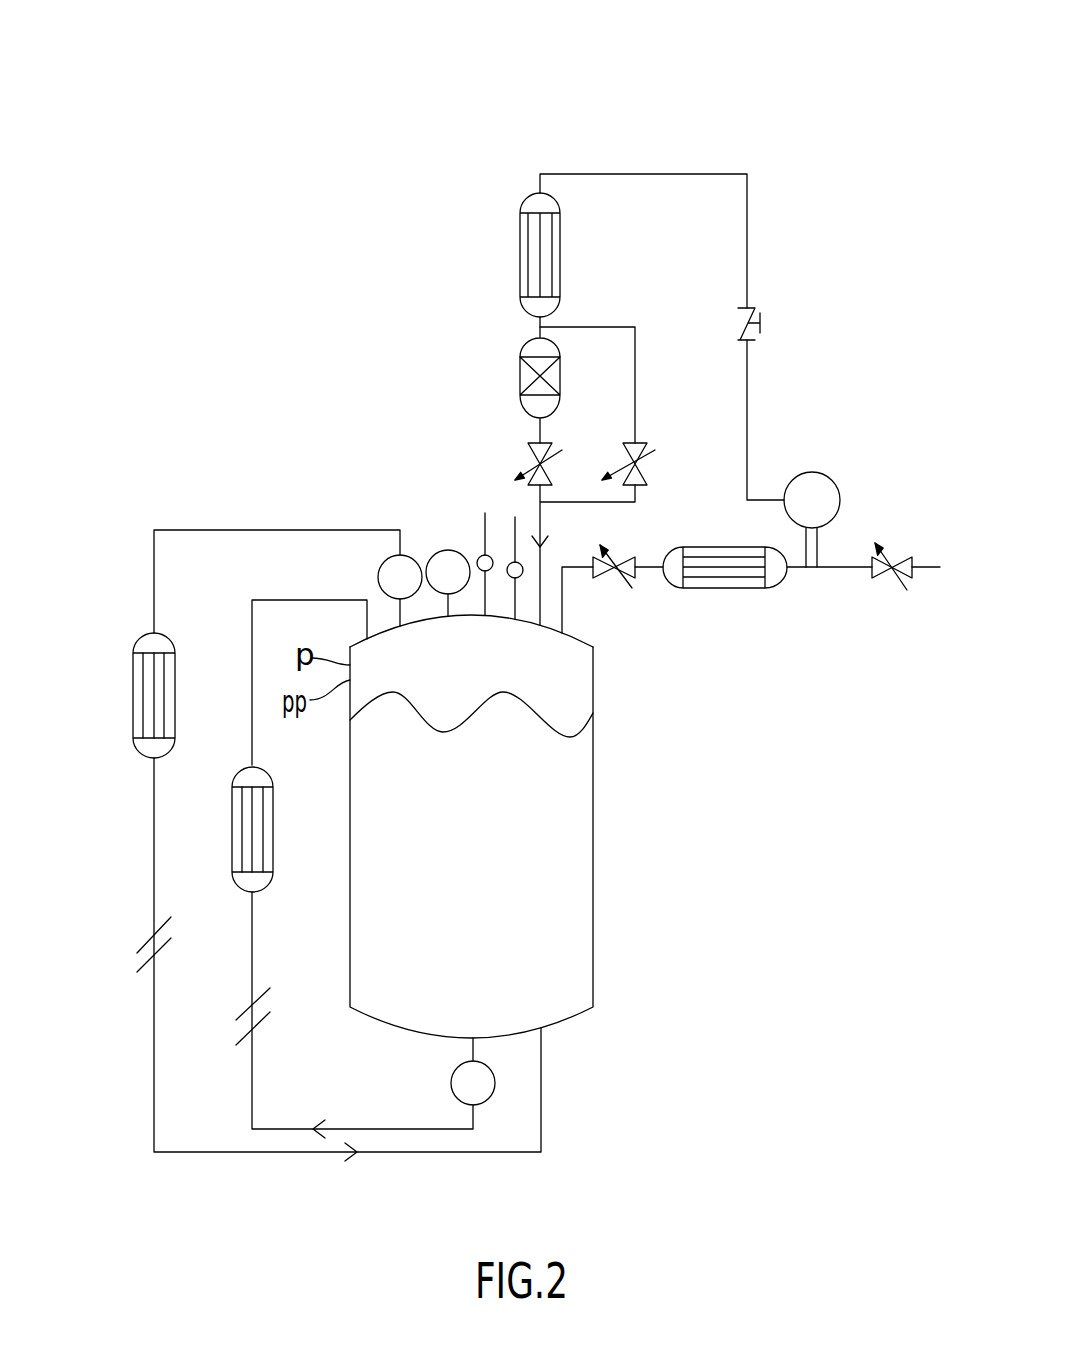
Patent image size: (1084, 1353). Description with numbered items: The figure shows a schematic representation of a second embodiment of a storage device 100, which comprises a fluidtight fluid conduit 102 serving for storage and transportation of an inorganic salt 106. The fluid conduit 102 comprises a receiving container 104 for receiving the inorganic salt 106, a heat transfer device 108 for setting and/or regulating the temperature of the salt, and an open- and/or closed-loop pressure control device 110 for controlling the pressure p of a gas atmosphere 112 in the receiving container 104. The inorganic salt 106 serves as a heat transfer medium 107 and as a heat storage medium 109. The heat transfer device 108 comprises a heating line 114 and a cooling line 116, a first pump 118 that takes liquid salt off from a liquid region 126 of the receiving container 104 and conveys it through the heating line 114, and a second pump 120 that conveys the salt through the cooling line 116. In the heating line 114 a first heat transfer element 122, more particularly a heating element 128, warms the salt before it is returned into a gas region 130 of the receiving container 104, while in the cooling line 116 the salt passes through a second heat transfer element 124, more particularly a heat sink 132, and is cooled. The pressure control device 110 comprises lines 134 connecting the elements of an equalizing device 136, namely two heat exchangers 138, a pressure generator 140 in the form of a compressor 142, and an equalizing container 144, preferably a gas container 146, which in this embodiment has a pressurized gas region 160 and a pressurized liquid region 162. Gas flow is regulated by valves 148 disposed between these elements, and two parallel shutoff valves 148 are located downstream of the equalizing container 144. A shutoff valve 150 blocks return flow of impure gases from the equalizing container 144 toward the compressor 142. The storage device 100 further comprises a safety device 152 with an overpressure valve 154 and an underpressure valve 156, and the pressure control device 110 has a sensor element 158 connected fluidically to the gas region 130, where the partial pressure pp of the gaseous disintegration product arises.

The storage device 100 is at (858, 106).
The fluid conduit 102 is at (380, 420).
The receiving container 104 is at (594, 682).
The inorganic salt 106 is at (578, 857).
The heat transfer medium 107 is at (578, 812).
The heat transfer device 108 is at (240, 515).
The heat storage medium 109 is at (578, 897).
The open- and/or closed-loop pressure control device 110 is at (720, 135).
The gas atmosphere 112 is at (580, 657).
The heating line 114 is at (353, 1129).
The cooling line 116 is at (227, 1153).
The first pump 118 is at (452, 1080).
The second pump 120 is at (400, 555).
The first heat transfer element 122 is at (232, 815).
The second heat transfer element 124 is at (133, 696).
The liquid region 126 is at (560, 952).
The heating element 128 is at (232, 852).
The gas region 130 is at (578, 708).
The heat sink 132 is at (133, 648).
The lines 134 is at (747, 236).
The equalizing device 136 is at (652, 125).
The heat exchanger 138 is at (520, 255).
The pressure generator 140 is at (830, 483).
The compressor 142 is at (838, 510).
The equalizing container 144 is at (520, 350).
The gas container 146 is at (520, 372).
The valves 148 is at (556, 443).
The shutoff valve 150 is at (755, 308).
The safety device 152 is at (499, 517).
The overpressure valve 154 is at (481, 557).
The underpressure valve 156 is at (518, 578).
The sensor element 158 is at (440, 594).
The pressurized gas region 160 is at (550, 357).
The pressurized liquid region 162 is at (550, 405).